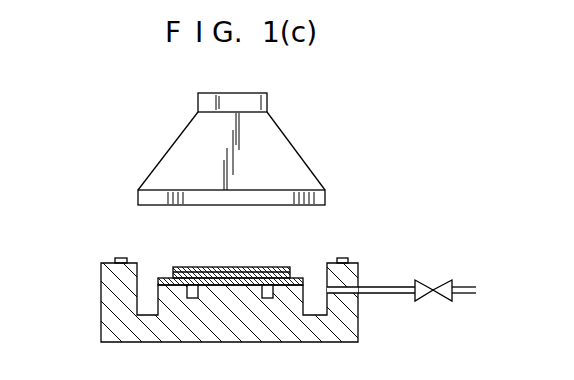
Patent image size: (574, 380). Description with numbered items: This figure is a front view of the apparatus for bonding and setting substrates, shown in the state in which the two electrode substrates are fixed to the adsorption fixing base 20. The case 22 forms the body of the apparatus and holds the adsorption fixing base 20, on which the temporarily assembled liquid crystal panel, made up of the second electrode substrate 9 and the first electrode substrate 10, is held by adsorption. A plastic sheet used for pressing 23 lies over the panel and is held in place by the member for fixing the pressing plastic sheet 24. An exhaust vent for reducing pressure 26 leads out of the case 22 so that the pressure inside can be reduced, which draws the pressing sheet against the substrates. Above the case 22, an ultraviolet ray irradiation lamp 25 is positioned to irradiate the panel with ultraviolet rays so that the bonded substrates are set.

The ultraviolet ray irradiation lamp 25 is at (302, 150).
The case 22 is at (101, 284).
The member for fixing the pressing plastic sheet 24 is at (113, 258).
The adsorption fixing base 20 is at (158, 300).
The second electrode substrate 9 is at (290, 265).
The plastic sheet used for pressing 23 is at (282, 265).
The first electrode substrate 10 is at (312, 279).
The exhaust vent for reducing pressure 26 is at (402, 286).